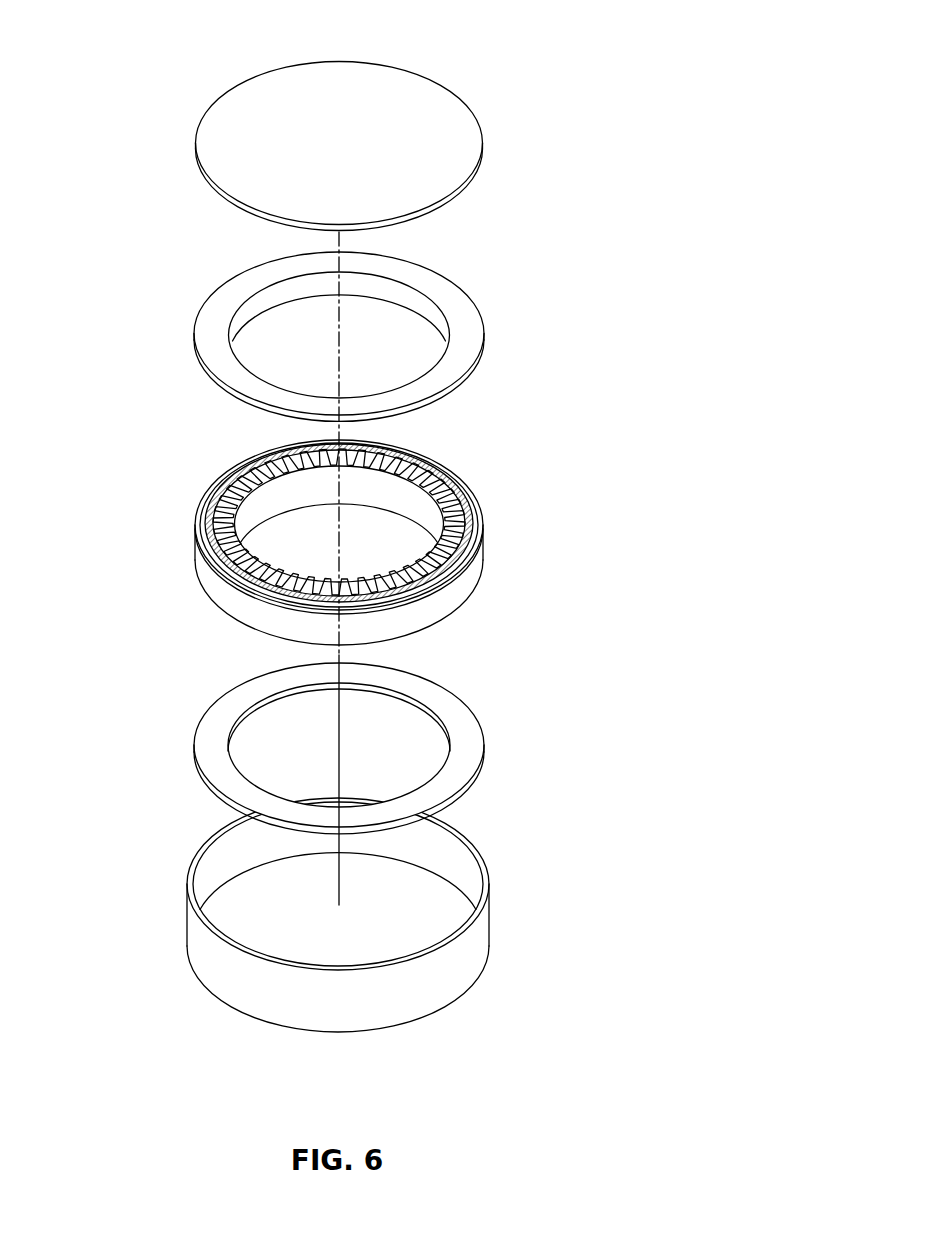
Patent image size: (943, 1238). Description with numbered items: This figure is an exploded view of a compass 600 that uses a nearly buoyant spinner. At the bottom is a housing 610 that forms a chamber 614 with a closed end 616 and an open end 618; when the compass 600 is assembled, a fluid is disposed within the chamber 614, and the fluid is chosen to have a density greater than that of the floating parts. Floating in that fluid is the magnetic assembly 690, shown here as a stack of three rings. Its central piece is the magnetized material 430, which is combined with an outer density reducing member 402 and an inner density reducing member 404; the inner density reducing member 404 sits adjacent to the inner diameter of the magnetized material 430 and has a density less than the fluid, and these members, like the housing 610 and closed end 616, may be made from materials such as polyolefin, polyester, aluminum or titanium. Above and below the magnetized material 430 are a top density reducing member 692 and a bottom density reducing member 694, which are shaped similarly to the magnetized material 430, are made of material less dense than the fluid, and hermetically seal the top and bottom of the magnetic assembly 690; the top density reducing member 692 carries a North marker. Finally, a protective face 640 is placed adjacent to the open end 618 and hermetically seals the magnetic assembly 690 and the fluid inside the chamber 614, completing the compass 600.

The compass 600 is at (643, 62).
The protective face 640 is at (433, 104).
The top density reducing member 692 is at (208, 300).
The outer density reducing member 402 is at (205, 590).
The inner density reducing member 404 is at (252, 513).
The magnetized material 430 is at (443, 468).
The magnetic assembly 690 is at (497, 251).
The bottom density reducing member 694 is at (208, 735).
The chamber 614 is at (264, 908).
The open end 618 is at (460, 868).
The housing 610 is at (325, 942).
The closed end 616 is at (420, 1017).